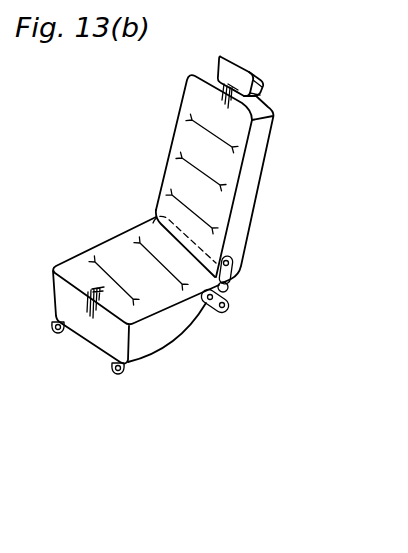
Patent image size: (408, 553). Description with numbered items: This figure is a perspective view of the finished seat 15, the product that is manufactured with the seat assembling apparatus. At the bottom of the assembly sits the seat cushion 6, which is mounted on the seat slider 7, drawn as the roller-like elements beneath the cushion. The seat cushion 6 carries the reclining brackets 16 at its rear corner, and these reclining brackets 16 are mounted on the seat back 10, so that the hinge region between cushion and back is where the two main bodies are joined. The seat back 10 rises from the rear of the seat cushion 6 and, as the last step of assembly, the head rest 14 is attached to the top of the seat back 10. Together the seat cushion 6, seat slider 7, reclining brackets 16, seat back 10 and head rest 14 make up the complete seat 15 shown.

The seat cushion 6 is at (165, 330).
The seat slider 7 is at (129, 369).
The seat back 10 is at (255, 215).
The head rest 14 is at (263, 88).
The seat 15 is at (113, 228).
The reclining brackets 16 is at (229, 289).